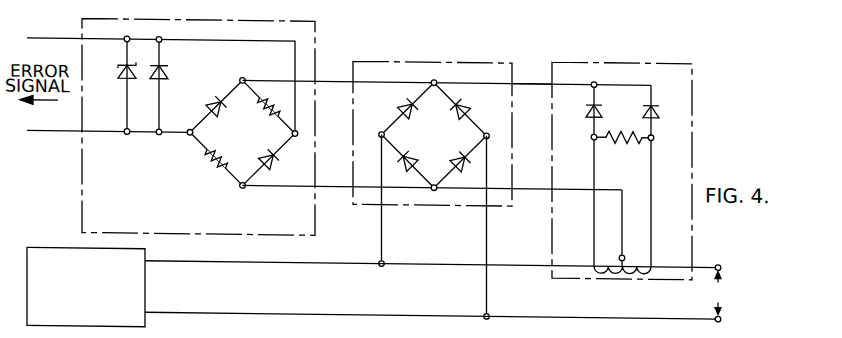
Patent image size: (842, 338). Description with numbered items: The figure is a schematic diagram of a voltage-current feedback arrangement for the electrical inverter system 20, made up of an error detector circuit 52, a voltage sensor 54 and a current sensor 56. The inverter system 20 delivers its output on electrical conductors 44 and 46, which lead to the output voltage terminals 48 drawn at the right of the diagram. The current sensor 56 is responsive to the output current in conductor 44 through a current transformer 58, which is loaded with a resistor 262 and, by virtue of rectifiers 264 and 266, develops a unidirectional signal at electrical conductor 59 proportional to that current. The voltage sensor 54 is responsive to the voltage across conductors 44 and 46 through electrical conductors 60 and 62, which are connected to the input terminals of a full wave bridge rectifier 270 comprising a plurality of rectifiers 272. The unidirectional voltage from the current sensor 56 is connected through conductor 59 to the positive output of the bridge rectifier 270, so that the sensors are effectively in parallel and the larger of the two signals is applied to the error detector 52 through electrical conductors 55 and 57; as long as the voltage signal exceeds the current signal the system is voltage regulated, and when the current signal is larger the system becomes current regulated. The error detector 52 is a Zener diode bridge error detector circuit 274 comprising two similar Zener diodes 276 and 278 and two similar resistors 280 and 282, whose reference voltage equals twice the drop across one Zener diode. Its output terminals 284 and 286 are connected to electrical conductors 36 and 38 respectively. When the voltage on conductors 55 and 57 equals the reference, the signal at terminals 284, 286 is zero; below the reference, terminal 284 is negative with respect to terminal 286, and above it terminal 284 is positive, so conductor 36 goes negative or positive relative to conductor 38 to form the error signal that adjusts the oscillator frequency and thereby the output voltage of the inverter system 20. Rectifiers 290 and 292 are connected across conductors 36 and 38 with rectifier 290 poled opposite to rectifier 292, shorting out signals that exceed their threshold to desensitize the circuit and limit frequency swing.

The electrical inverter system 20 is at (62, 246).
The electrical conductor 36 is at (68, 130).
The electrical conductor 38 is at (72, 36).
The electrical conductor 44 is at (243, 261).
The electrical conductor 46 is at (250, 309).
The output voltage terminals 48 is at (716, 257).
The error detector circuit 52 is at (238, 16).
The voltage sensor 54 is at (398, 59).
The electrical conductor 55 is at (343, 84).
The current sensor 56 is at (587, 58).
The electrical conductor 57 is at (348, 183).
The current transformer 58 is at (600, 256).
The electrical conductor 59 is at (542, 74).
The electrical conductor 60 is at (380, 228).
The electrical conductor 62 is at (485, 228).
The resistor 262 is at (638, 136).
The rectifier 264 is at (586, 103).
The rectifier 266 is at (673, 95).
The full wave bridge rectifier 270 is at (432, 135).
The rectifiers 272 is at (405, 100).
The Zener diode bridge error detector circuit 274 is at (227, 122).
The Zener diode 276 is at (213, 97).
The Zener diode 278 is at (284, 167).
The resistor 280 is at (212, 156).
The resistor 282 is at (276, 75).
The output terminal 284 is at (187, 133).
The output terminal 286 is at (296, 133).
The rectifier 290 is at (118, 72).
The rectifier 292 is at (176, 67).